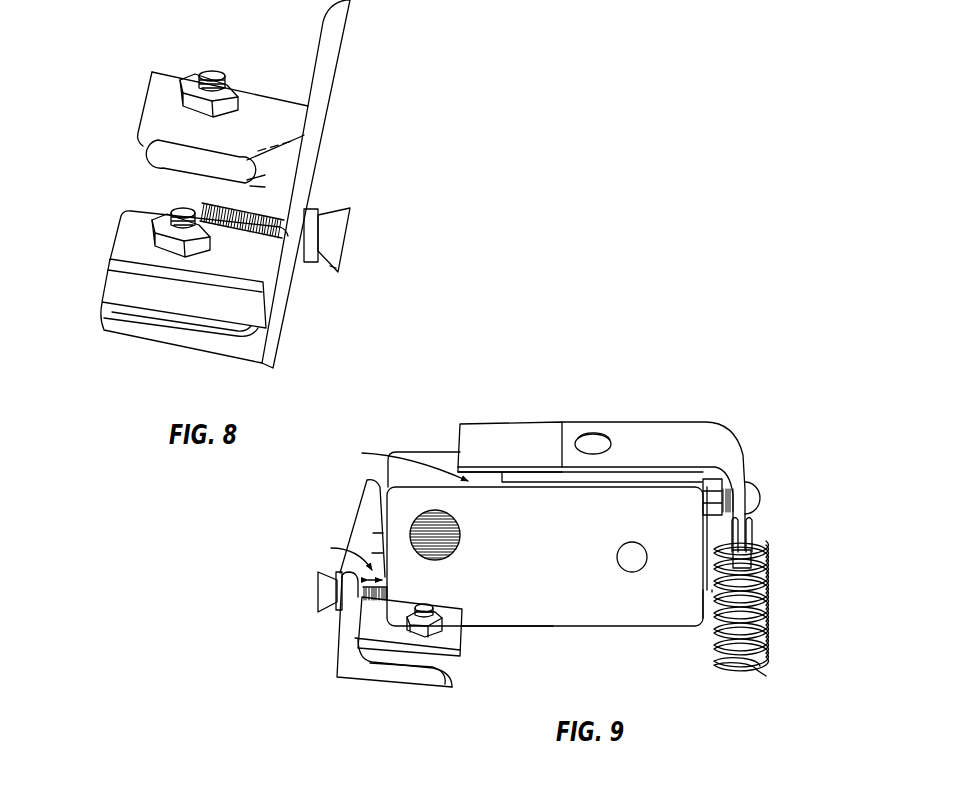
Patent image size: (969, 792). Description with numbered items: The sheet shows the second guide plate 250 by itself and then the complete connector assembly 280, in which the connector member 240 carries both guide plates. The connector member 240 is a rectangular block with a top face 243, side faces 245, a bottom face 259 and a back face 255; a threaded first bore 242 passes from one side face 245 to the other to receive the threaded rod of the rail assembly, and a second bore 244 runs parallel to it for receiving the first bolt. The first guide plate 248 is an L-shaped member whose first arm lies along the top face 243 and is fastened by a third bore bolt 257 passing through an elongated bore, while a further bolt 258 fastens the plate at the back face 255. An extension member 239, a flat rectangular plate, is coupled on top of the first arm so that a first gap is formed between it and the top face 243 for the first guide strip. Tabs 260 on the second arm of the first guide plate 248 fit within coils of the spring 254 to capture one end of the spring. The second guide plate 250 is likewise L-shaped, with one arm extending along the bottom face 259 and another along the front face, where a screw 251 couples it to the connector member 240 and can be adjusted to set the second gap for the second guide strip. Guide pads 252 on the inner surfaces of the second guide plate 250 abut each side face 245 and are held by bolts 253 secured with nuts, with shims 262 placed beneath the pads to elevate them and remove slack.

In FIG. 8, the second guide plate 250 is at (333, 52).
In FIG. 8, the screw 251 is at (343, 233).
In FIG. 9, the screw 251 is at (318, 590).
In FIG. 8, the guide pad 252 is at (150, 107).
In FIG. 9, the guide pad 252 is at (452, 662).
In FIG. 8, the bolt 253 is at (210, 72).
In FIG. 9, the bolt 253 is at (424, 610).
In FIG. 8, the shim 262 is at (104, 314).
In FIG. 9, the shim 262 is at (407, 670).
In FIG. 9, the connector assembly 280 is at (676, 357).
In FIG. 9, the extension member 239 is at (515, 437).
In FIG. 9, the third bore bolt 257 is at (594, 437).
In FIG. 9, the first guide plate 248 is at (672, 437).
In FIG. 9, the top face 243 is at (428, 460).
In FIG. 9, the first bore 242 is at (456, 524).
In FIG. 9, the side face 245 is at (540, 572).
In FIG. 9, the second bore 244 is at (632, 572).
In FIG. 9, the bottom face 259 is at (556, 632).
In FIG. 9, the connector member 240 is at (666, 617).
In FIG. 9, the bolt 258 is at (757, 500).
In FIG. 9, the tab 260 is at (755, 536).
In FIG. 9, the spring 254 is at (767, 578).
In FIG. 9, the back face 255 is at (758, 608).